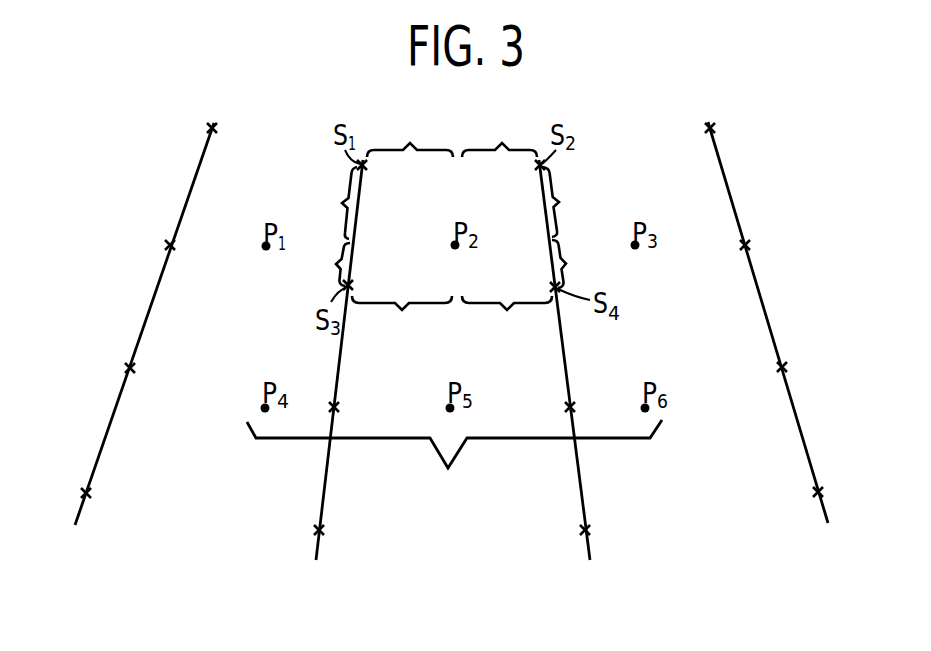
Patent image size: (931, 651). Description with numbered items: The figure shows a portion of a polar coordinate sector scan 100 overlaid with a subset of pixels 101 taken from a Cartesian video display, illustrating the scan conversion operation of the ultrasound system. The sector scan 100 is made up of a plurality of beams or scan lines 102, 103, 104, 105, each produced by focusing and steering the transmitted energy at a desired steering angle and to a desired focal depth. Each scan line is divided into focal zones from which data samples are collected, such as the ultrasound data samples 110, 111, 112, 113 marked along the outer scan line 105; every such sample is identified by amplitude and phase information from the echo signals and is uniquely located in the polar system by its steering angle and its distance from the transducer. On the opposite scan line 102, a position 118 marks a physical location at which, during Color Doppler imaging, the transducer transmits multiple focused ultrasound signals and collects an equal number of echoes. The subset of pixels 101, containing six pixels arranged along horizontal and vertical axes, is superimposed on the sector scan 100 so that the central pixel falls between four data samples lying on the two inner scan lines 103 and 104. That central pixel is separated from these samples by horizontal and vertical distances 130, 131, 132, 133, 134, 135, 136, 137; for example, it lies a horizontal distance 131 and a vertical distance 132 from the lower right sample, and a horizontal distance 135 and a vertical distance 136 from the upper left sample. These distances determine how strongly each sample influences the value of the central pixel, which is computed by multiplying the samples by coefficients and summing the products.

The sector scan 100 is at (147, 154).
The subset of pixels 101 is at (454, 462).
The scan line 102 is at (143, 328).
The scan line 103 is at (327, 466).
The scan line 104 is at (576, 462).
The scan line 105 is at (787, 393).
The ultrasound data sample 110 is at (711, 125).
The ultrasound data sample 111 is at (747, 243).
The ultrasound data sample 112 is at (785, 366).
The ultrasound data sample 113 is at (840, 480).
The position 118 is at (128, 367).
The horizontal distance 130 is at (402, 321).
The horizontal distance 131 is at (507, 321).
The vertical distance 132 is at (579, 264).
The vertical distance 133 is at (571, 202).
The horizontal distance 134 is at (499, 137).
The horizontal distance 135 is at (410, 137).
The vertical distance 136 is at (329, 203).
The vertical distance 137 is at (325, 264).